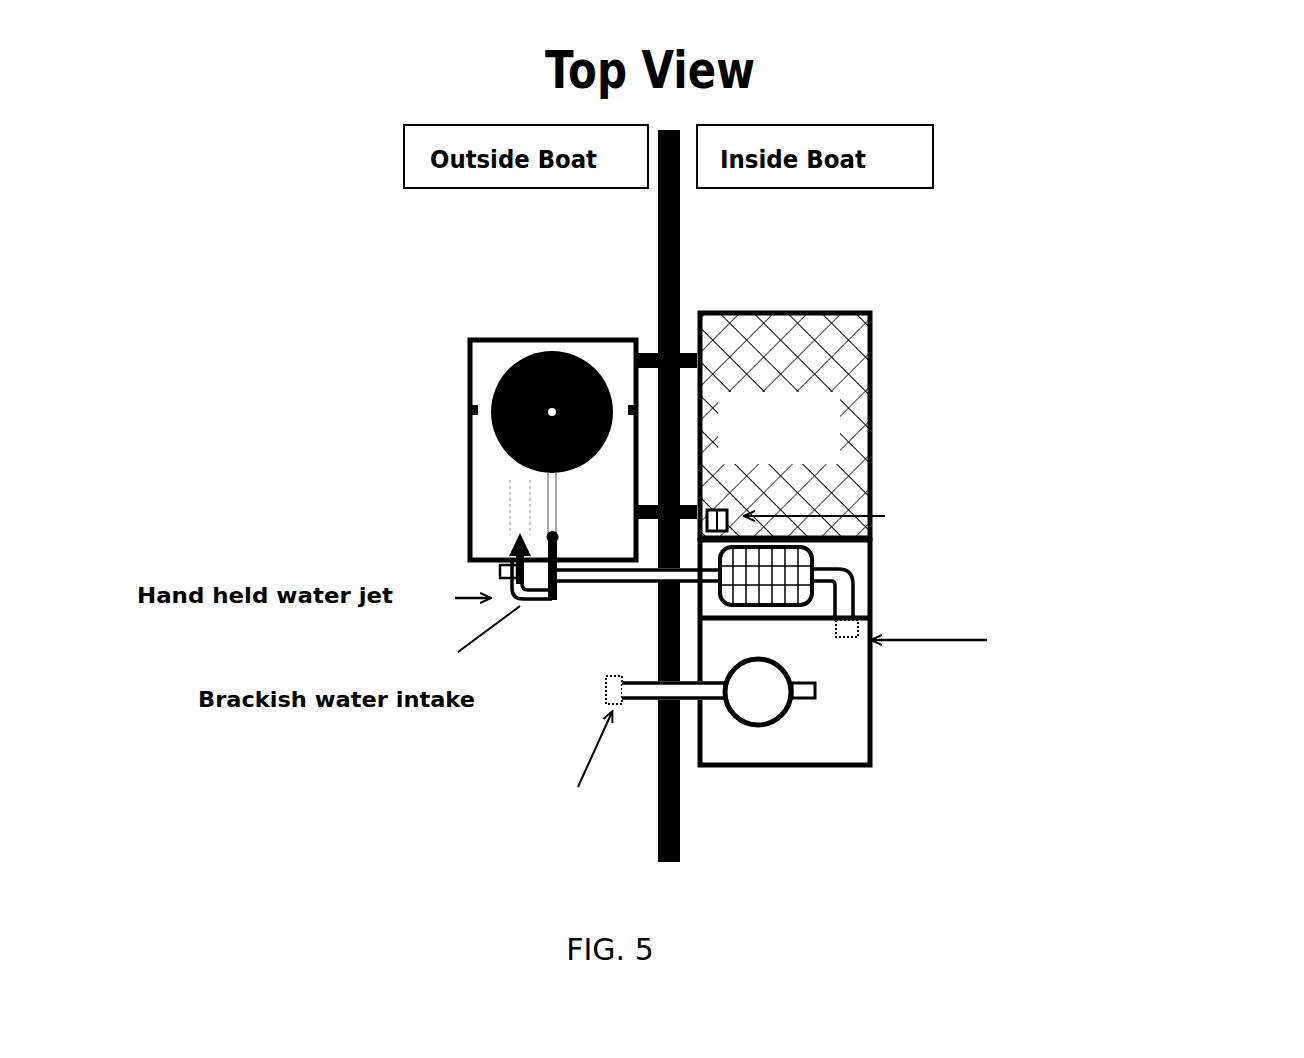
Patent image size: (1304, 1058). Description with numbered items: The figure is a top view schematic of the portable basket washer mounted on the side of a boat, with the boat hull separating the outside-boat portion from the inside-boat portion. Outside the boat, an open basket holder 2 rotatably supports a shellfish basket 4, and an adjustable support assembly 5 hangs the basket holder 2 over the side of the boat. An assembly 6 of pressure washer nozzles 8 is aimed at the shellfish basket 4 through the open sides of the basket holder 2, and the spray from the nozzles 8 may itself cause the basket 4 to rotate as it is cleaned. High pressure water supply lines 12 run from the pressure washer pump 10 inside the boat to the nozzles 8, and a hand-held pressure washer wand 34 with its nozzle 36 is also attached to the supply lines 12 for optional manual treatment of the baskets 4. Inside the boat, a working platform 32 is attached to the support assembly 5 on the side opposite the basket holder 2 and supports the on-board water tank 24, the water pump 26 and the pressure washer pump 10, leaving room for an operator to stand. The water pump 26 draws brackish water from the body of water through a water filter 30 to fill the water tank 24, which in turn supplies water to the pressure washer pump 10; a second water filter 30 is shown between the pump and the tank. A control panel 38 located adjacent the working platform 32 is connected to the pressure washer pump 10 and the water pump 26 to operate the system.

The open basket holder 2 is at (488, 337).
The shellfish basket 4 is at (563, 377).
The adjustable support assembly 5 is at (685, 352).
The assembly of pressure washer nozzles 6 is at (553, 597).
The pressure washer nozzle 8 is at (551, 535).
The pressure washer pump 10 is at (790, 590).
The high pressure water supply line 12 is at (617, 583).
The on-board water tank 24 is at (787, 742).
The water pump 26 is at (770, 692).
The water filter 30 is at (398, 786).
The working platform 32 is at (838, 368).
The hand-held pressure washer wand 34 is at (471, 648).
The nozzle 36 is at (514, 545).
The control panel 38 is at (920, 517).